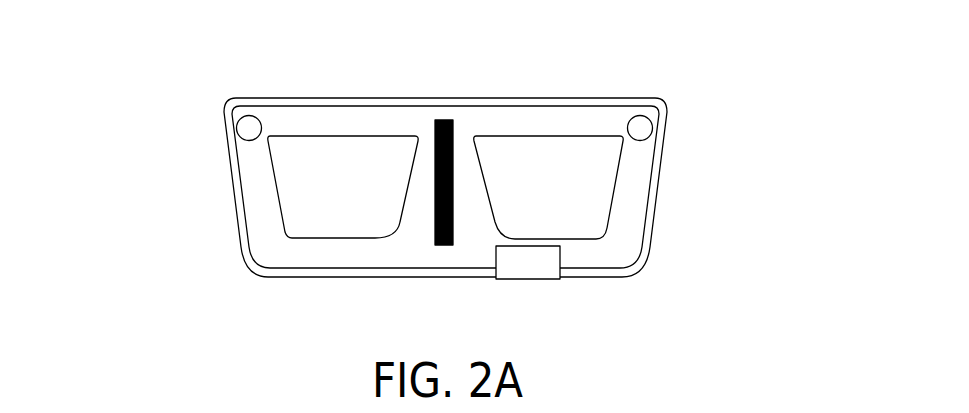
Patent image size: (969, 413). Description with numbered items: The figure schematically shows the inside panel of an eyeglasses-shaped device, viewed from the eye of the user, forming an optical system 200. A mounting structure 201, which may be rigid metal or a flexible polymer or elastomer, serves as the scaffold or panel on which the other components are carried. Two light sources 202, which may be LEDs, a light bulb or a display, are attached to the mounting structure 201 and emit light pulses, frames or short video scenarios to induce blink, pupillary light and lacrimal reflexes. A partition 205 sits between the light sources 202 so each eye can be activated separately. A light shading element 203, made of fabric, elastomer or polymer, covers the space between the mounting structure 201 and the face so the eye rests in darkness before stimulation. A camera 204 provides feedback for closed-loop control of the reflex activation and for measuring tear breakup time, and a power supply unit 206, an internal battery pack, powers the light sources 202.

The optical system 200 is at (321, 58).
The mounting structure 201 is at (527, 100).
The light source 202 is at (594, 220).
The light shading element 203 is at (657, 175).
The camera 204 is at (247, 128).
The partition 205 is at (435, 90).
The power supply unit 206 is at (528, 267).